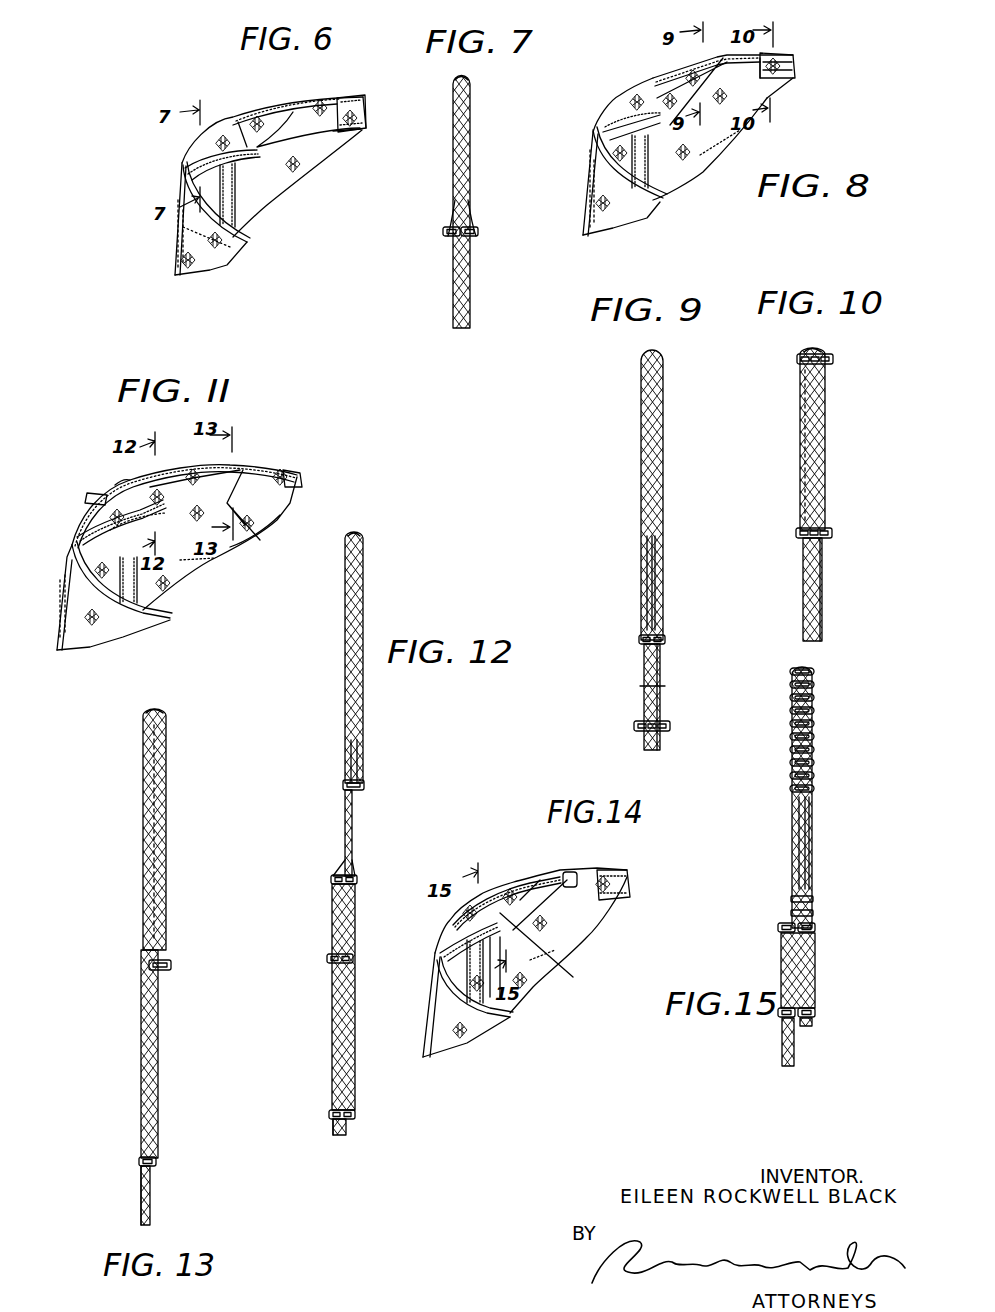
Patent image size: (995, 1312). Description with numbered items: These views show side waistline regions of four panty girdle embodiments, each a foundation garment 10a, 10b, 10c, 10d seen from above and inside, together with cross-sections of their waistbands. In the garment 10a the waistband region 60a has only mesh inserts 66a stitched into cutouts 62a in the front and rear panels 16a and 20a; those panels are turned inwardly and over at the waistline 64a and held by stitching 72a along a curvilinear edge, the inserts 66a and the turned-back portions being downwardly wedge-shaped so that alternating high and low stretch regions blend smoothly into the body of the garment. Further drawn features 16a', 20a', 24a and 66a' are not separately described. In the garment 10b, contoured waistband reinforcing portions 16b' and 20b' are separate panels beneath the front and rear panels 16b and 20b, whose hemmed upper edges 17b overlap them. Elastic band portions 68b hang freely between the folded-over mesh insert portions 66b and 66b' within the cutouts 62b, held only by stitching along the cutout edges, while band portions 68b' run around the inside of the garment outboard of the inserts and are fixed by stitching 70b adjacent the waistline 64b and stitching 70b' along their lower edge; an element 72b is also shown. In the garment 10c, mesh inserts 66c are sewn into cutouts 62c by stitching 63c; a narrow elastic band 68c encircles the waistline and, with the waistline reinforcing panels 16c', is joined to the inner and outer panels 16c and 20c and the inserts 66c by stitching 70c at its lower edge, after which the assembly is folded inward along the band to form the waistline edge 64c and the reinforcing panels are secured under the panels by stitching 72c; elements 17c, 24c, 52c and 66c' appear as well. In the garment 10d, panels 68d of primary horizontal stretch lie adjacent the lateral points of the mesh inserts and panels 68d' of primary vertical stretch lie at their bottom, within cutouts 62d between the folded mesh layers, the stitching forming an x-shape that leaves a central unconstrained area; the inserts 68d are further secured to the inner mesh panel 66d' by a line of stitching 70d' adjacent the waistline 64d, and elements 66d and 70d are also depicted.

In FIG. 6, the foundation garment 10a is at (301, 212).
In FIG. 8, the garment 10b is at (818, 89).
In FIG. 11, the garment 10c is at (316, 471).
In FIG. 14, the garment 10d is at (622, 923).
In FIG. 6, the front panel 16a is at (149, 245).
In FIG. 6, the lower strap section 16a' is at (185, 168).
In FIG. 8, the front panel 16b is at (582, 190).
In FIG. 9, the front panel 16b is at (626, 697).
In FIG. 10, the front panel 16b is at (783, 589).
In FIG. 8, the contoured waistband reinforcing portion 16b' is at (609, 147).
In FIG. 9, the contoured waistband reinforcing portion 16b' is at (681, 701).
In FIG. 10, the contoured waistband reinforcing portion 16b' is at (849, 589).
In FIG. 11, the front panel 16c is at (78, 631).
In FIG. 12, the front panel 16c is at (308, 1146).
In FIG. 13, the front panel 16c is at (113, 1195).
In FIG. 12, the waistline reinforcing panel 16c' is at (372, 997).
In FIG. 13, the waistline reinforcing panel 16c' is at (178, 1054).
In FIG. 10, the hem 17b is at (824, 388).
In FIG. 13, the strap 17c is at (166, 757).
In FIG. 6, the rear panel 20a is at (298, 183).
In FIG. 6, the crown panel 20a' is at (370, 145).
In FIG. 8, the rear panel 20b is at (710, 155).
In FIG. 8, the contoured waistband reinforcing portion 20b' is at (805, 101).
In FIG. 11, the rear panel 20c is at (248, 540).
In FIG. 6, the vertical band 24a is at (237, 220).
In FIG. 11, the vertical band 24c is at (145, 600).
In FIG. 12, the strap end 52c is at (350, 1128).
In FIG. 13, the strap end 52c is at (151, 1212).
In FIG. 6, the waistband region 60a is at (371, 119).
In FIG. 6, the cutouts 62a is at (293, 110).
In FIG. 7, the cutouts 62a is at (488, 218).
In FIG. 9, the cutouts 62b is at (640, 636).
In FIG. 11, the cutouts 62c is at (95, 528).
In FIG. 12, the cutouts 62c is at (340, 870).
In FIG. 14, the cutouts 62d is at (575, 872).
In FIG. 15, the cutouts 62d is at (790, 925).
In FIG. 12, the stitching 63c is at (328, 958).
In FIG. 6, the waistline 64a is at (352, 90).
In FIG. 7, the waistline 64a is at (466, 78).
In FIG. 10, the waistline 64b is at (820, 350).
In FIG. 12, the waistline edge 64c is at (362, 537).
In FIG. 13, the waistline edge 64c is at (163, 712).
In FIG. 14, the waistline 64d is at (628, 873).
In FIG. 7, the mesh inserts 66a is at (483, 202).
In FIG. 7, the strap section 66a' is at (444, 205).
In FIG. 9, the web insert 66b is at (611, 568).
In FIG. 9, the web insert 66b' is at (686, 570).
In FIG. 11, the mesh inserts 66c is at (184, 496).
In FIG. 12, the mesh inserts 66c is at (375, 833).
In FIG. 11, the strap section 66c' is at (115, 480).
In FIG. 12, the strap section 66c' is at (384, 760).
In FIG. 15, the strap section 66d is at (768, 843).
In FIG. 15, the inner panel of web mesh insert 66d' is at (837, 843).
In FIG. 8, the elastic band portions 68b is at (707, 68).
In FIG. 9, the elastic band portions 68b is at (675, 495).
In FIG. 8, the elastic band portions 68b' is at (809, 66).
In FIG. 10, the elastic band portions 68b' is at (850, 439).
In FIG. 11, the narrow elastic band 68c is at (245, 473).
In FIG. 12, the narrow elastic band 68c is at (362, 760).
In FIG. 13, the narrow elastic band 68c is at (166, 895).
In FIG. 14, the primary horizontal stretch panels 68d is at (507, 877).
In FIG. 15, the primary horizontal stretch panels 68d is at (835, 797).
In FIG. 14, the primary vertical stretch panels 68d' is at (568, 945).
In FIG. 15, the primary vertical stretch panels 68d' is at (839, 902).
In FIG. 10, the stitching 70b is at (796, 356).
In FIG. 10, the stitching 70b' is at (795, 514).
In FIG. 11, the stitching 70c is at (98, 495).
In FIG. 12, the stitching 70c is at (365, 786).
In FIG. 13, the stitching 70c is at (171, 966).
In FIG. 14, the ring 70d is at (450, 957).
In FIG. 15, the ring 70d is at (834, 730).
In FIG. 14, the line of stitching 70d' is at (449, 979).
In FIG. 6, the stitching 72a is at (210, 250).
In FIG. 8, the slide 72b is at (775, 58).
In FIG. 11, the stitching 72c is at (278, 518).
In FIG. 12, the stitching 72c is at (330, 882).
In FIG. 13, the stitching 72c is at (160, 1162).